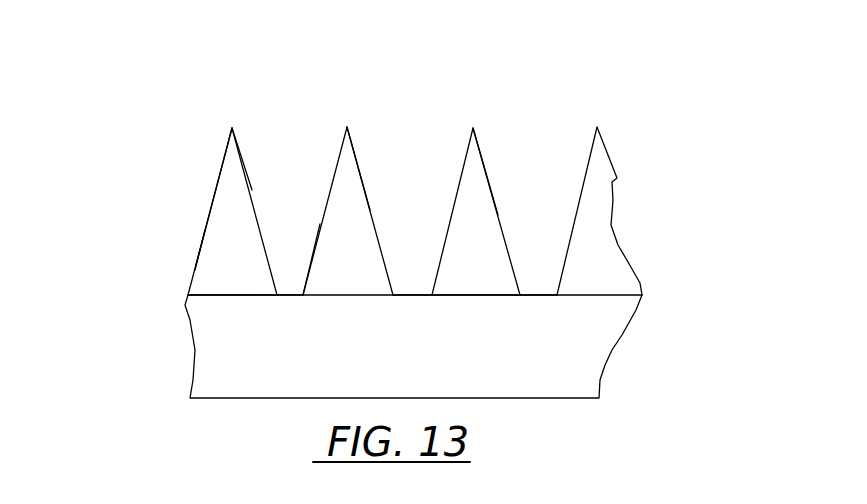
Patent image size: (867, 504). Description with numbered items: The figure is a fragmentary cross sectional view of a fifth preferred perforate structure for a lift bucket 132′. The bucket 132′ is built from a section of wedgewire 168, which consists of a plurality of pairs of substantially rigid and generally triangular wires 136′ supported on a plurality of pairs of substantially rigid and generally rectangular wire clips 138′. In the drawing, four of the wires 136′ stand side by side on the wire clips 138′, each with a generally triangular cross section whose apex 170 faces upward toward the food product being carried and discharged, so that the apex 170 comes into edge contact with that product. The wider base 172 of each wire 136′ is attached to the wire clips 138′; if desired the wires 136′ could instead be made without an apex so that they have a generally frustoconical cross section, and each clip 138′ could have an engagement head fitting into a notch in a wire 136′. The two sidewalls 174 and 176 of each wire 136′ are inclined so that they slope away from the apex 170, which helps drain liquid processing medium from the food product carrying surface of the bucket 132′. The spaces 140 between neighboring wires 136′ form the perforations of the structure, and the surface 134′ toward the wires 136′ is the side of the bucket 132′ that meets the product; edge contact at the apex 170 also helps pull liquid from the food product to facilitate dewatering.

The lift bucket 132′ is at (617, 148).
The tooth face 134′ is at (183, 188).
The wire 136′ is at (220, 157).
The wire clip 138′ is at (185, 336).
The gap between teeth 140 is at (280, 132).
The wedgewire 168 is at (175, 232).
The apex 170 is at (232, 128).
The base 172 is at (222, 283).
The sidewall 174 is at (252, 190).
The sidewall 176 is at (320, 224).